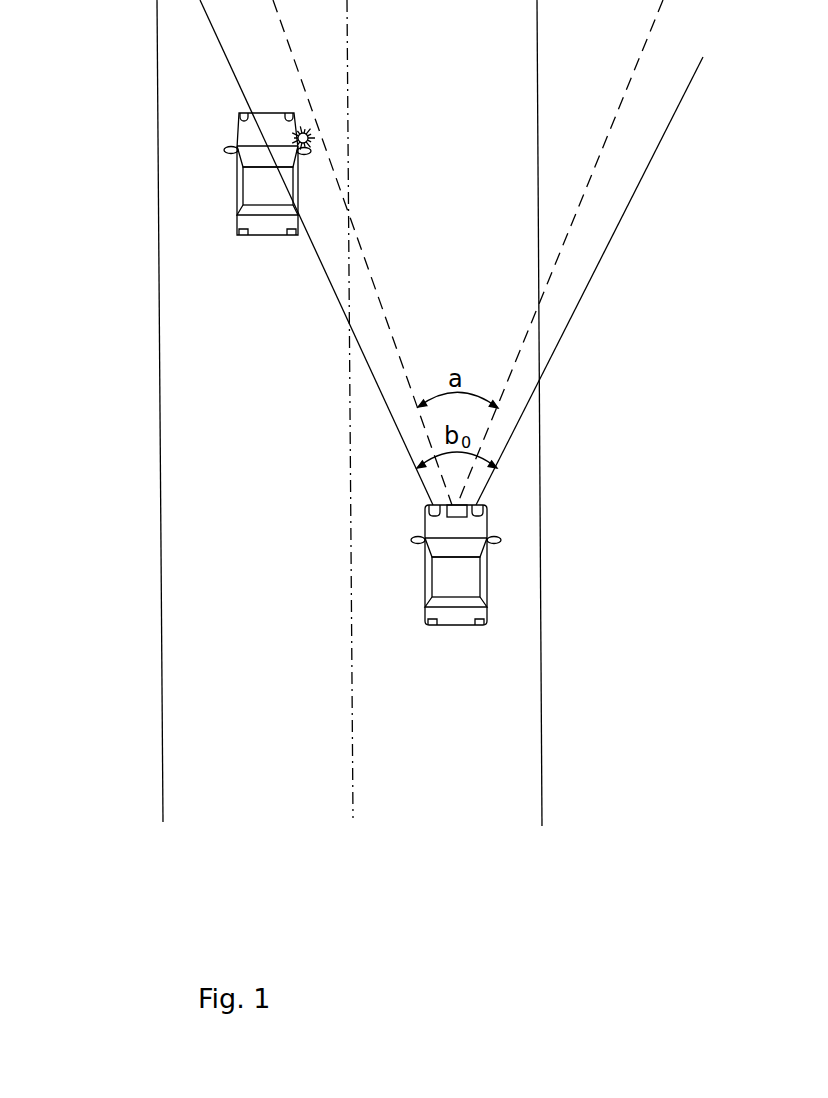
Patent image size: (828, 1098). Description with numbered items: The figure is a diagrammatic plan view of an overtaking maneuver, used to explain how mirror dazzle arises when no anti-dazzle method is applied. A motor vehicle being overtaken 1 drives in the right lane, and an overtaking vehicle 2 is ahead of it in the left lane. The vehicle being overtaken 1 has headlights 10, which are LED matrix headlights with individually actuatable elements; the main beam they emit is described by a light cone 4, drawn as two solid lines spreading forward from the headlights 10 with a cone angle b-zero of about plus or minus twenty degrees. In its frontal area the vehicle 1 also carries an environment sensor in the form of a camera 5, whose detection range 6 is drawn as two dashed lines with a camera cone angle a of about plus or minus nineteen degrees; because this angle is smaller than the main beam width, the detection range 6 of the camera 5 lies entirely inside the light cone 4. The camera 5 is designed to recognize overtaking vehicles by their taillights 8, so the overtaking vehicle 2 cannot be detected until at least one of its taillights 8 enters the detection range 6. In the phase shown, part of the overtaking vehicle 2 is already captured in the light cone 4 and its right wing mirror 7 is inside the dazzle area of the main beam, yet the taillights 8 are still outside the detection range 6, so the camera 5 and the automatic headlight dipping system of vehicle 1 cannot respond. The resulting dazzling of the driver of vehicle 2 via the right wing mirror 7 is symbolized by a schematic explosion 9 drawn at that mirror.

The motor vehicle being overtaken 1 is at (507, 601).
The overtaking vehicle 2 is at (200, 188).
The light cone 4 is at (588, 303).
The camera 5 is at (458, 514).
The detection range 6 is at (594, 184).
The right wing mirror 7 is at (226, 150).
The taillights 8 is at (242, 236).
The explosion 9 is at (311, 134).
The headlights 10 is at (430, 510).